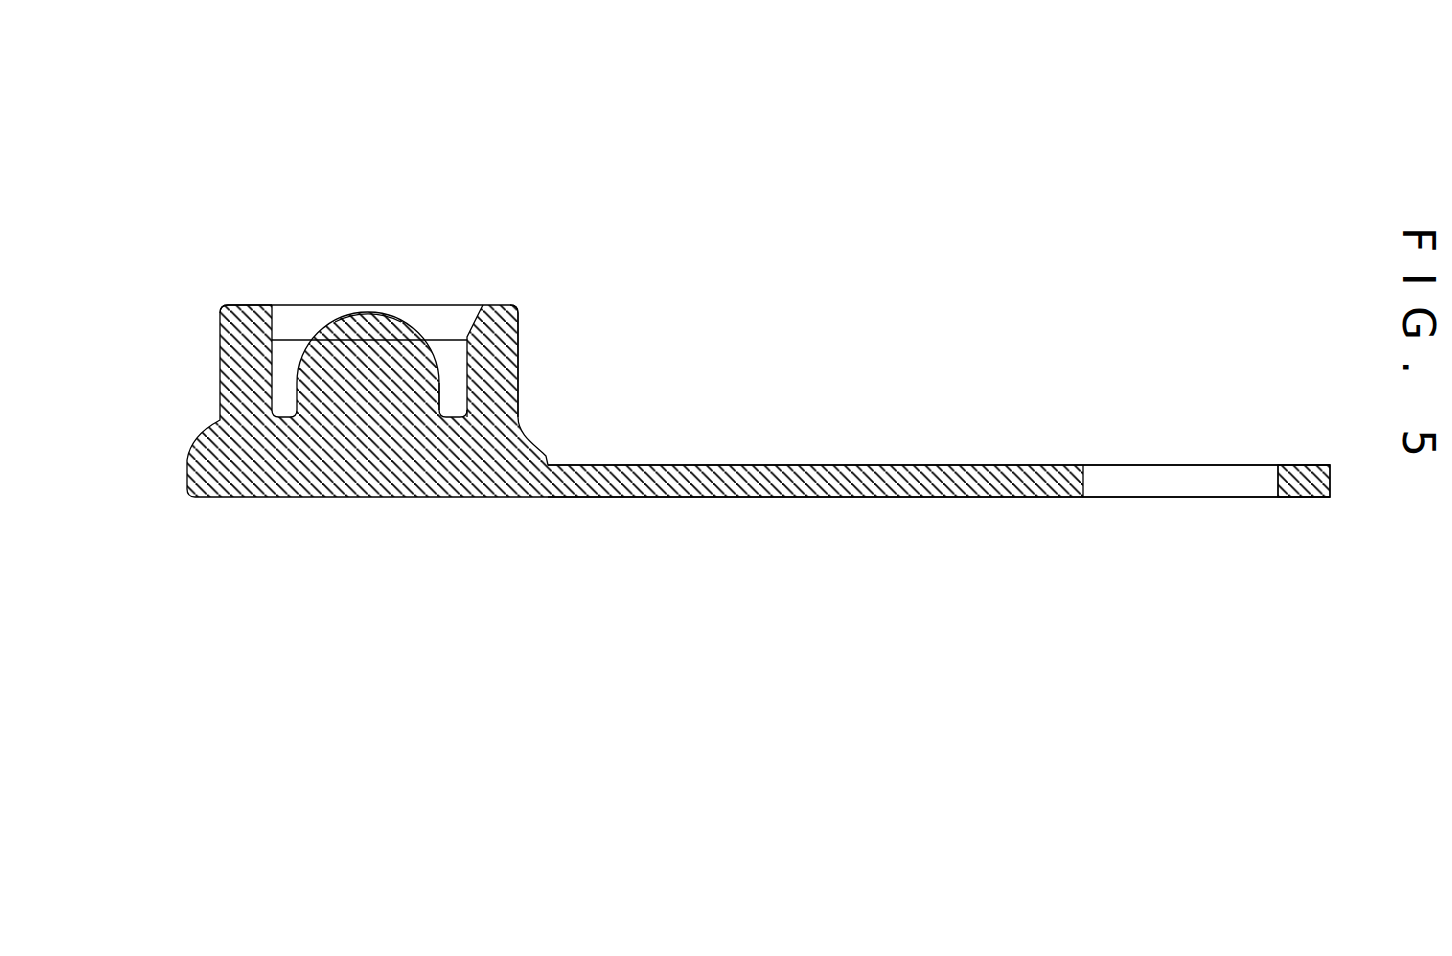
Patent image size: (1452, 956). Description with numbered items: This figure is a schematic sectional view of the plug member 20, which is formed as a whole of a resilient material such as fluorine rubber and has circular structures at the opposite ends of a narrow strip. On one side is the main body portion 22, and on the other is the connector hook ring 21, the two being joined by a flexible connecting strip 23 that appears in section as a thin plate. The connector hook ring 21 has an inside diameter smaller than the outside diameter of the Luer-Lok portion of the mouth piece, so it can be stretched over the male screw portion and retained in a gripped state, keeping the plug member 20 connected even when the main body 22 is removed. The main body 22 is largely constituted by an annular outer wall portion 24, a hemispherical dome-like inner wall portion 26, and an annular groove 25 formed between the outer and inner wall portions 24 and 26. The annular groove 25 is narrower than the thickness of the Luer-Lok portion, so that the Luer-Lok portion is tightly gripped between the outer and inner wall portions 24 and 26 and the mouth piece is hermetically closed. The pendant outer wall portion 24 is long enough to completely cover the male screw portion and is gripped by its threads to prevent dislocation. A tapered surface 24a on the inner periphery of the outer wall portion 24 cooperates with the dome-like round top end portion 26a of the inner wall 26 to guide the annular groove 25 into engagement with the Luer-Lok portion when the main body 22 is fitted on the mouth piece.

The plug member 20 is at (766, 432).
The connector hook ring 21 is at (1310, 497).
The main body portion 22 is at (356, 506).
The connecting strip 23 is at (847, 498).
The outer wall portion 24 is at (513, 333).
The tapered surface 24a is at (263, 323).
The annular groove 25 is at (454, 410).
The inner wall portion 26 is at (373, 353).
The round top end portion 26a is at (370, 320).